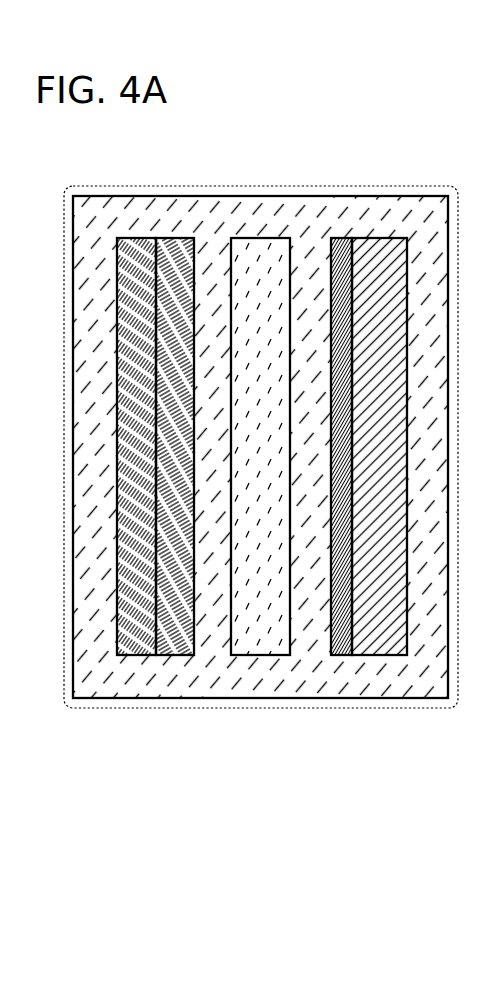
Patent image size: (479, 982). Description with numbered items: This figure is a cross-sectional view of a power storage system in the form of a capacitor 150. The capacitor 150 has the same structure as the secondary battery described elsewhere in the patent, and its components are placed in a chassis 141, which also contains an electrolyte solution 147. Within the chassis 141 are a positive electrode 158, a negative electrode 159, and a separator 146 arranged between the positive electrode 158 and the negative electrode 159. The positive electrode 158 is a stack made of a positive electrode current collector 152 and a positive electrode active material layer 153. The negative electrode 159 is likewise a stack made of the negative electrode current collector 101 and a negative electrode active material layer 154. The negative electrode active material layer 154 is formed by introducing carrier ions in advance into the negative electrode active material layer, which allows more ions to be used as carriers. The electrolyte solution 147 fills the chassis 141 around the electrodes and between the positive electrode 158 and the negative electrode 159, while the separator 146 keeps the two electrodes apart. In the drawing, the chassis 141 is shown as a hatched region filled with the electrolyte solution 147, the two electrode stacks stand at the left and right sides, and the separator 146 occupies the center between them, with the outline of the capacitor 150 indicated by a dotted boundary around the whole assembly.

The negative electrode current collector 101 is at (378, 640).
The chassis 141 is at (415, 196).
The separator 146 is at (260, 640).
The electrolyte solution 147 is at (98, 212).
The capacitor 150 is at (175, 185).
The positive electrode current collector 152 is at (135, 638).
The positive electrode active material layer 153 is at (172, 640).
The negative electrode active material layer 154 is at (345, 640).
The positive electrode 158 is at (156, 549).
The negative electrode 159 is at (363, 549).